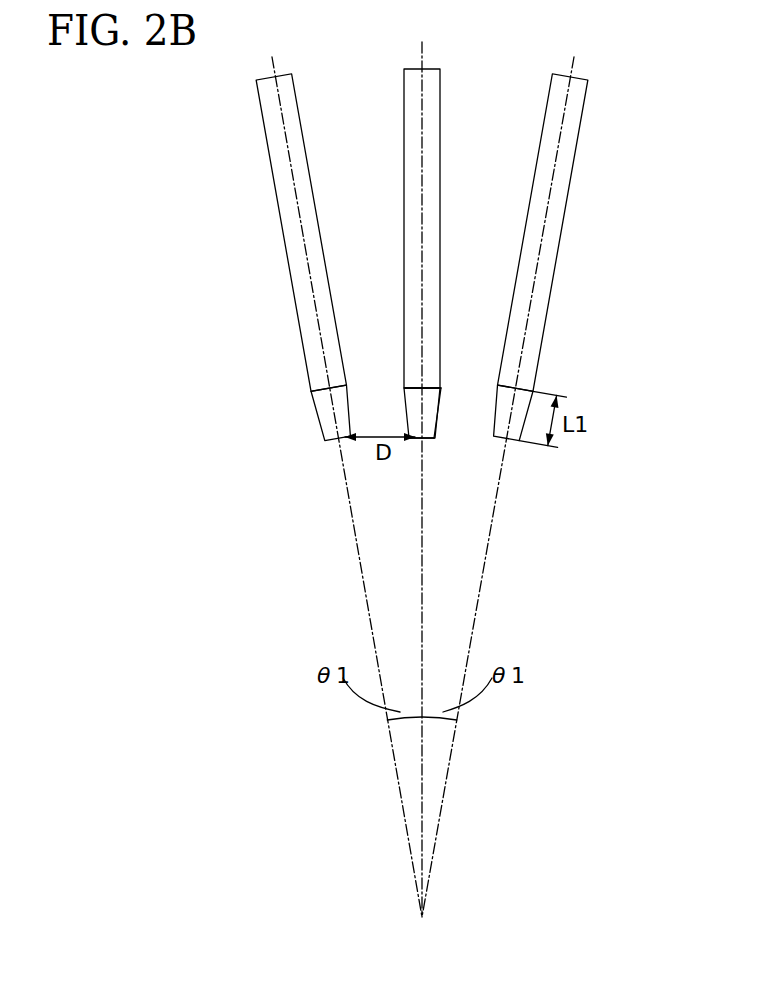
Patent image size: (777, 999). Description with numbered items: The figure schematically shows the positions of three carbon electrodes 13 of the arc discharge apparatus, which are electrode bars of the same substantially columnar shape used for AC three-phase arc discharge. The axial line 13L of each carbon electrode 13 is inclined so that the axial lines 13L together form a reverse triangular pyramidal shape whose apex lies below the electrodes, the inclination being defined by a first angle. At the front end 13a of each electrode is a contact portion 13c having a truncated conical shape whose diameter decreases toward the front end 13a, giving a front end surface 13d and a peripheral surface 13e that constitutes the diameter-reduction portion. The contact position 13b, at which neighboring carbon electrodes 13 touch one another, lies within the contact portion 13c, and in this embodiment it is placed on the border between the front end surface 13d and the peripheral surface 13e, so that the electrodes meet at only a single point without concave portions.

The carbon electrode 13 is at (265, 130).
The front end 13a is at (509, 447).
The contact position 13b is at (497, 392).
The contact portion 13c is at (556, 372).
The front end surface 13d is at (419, 444).
The peripheral surface 13e is at (493, 414).
The axial line 13L is at (422, 607).